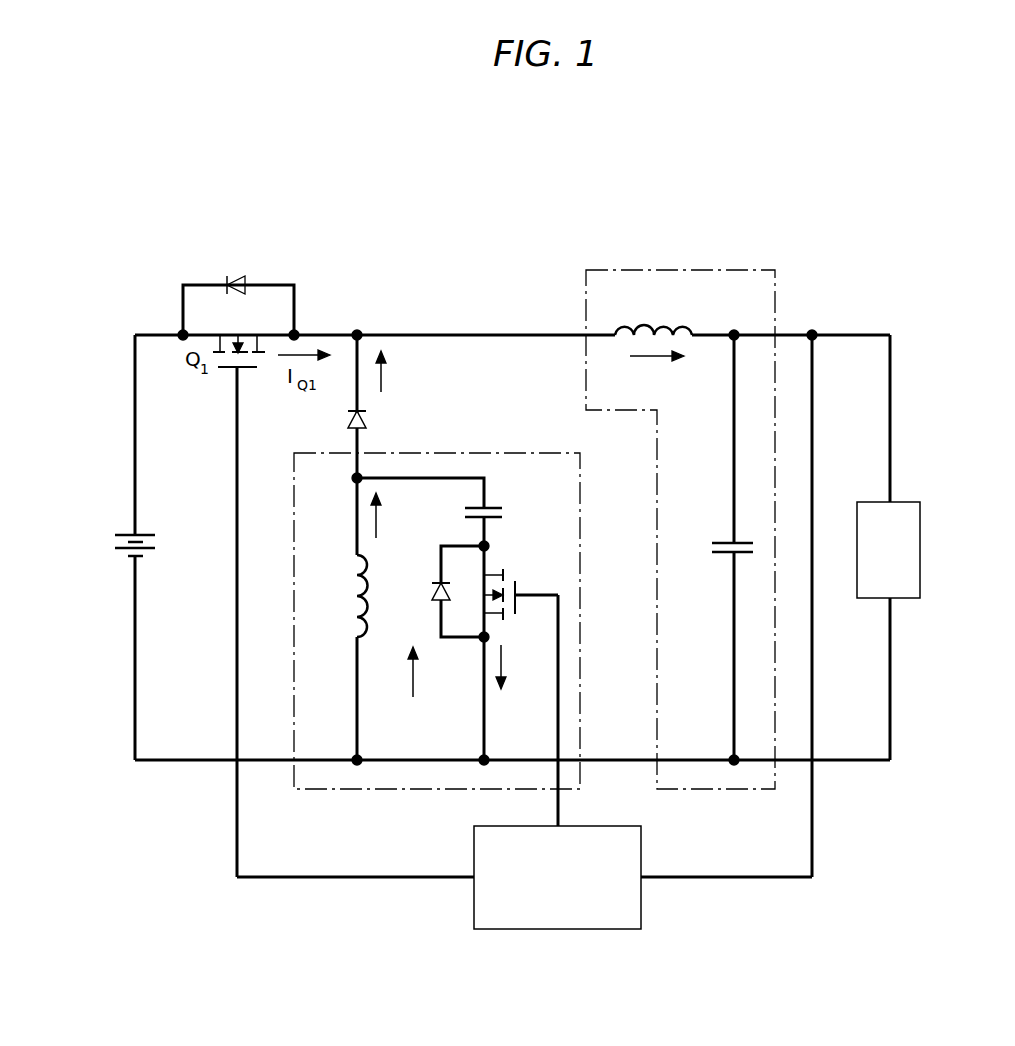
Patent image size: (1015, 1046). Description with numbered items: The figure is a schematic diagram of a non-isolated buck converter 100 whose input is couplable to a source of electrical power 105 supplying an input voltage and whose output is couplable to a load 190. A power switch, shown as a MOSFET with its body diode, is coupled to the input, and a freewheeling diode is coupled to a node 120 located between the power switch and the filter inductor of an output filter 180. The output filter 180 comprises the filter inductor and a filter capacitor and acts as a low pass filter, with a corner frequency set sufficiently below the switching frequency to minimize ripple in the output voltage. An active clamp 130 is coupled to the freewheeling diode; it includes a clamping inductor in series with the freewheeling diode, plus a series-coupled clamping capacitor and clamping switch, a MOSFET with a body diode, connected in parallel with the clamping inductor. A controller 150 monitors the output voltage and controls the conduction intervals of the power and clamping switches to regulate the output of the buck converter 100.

The non-isolated buck converter 100 is at (526, 170).
The source of electrical power 105 is at (158, 542).
The node 120 is at (357, 330).
The active clamp 130 is at (463, 452).
The controller 150 is at (642, 851).
The output filter 180 is at (709, 270).
The load 190 is at (921, 551).